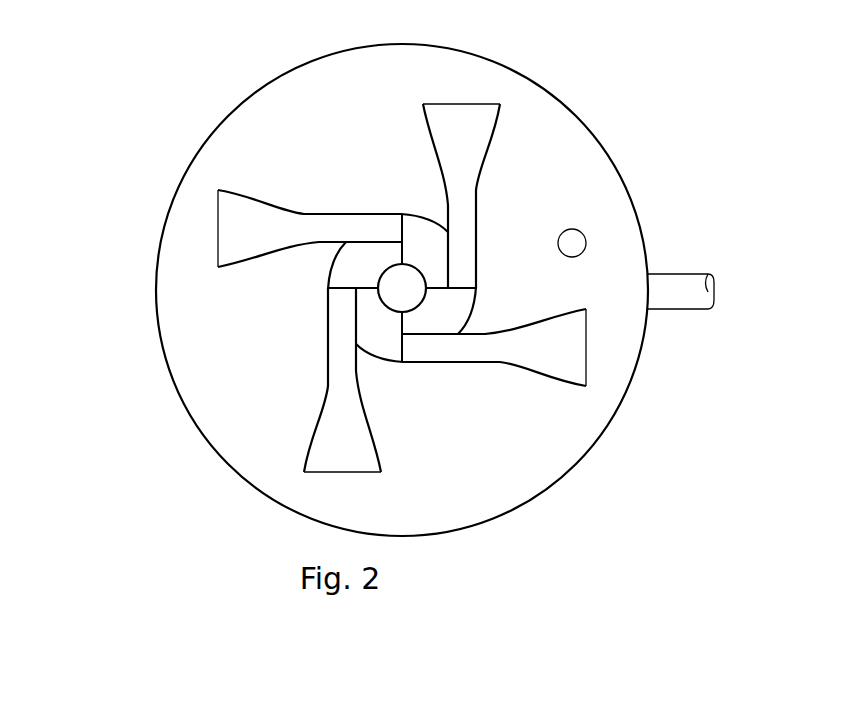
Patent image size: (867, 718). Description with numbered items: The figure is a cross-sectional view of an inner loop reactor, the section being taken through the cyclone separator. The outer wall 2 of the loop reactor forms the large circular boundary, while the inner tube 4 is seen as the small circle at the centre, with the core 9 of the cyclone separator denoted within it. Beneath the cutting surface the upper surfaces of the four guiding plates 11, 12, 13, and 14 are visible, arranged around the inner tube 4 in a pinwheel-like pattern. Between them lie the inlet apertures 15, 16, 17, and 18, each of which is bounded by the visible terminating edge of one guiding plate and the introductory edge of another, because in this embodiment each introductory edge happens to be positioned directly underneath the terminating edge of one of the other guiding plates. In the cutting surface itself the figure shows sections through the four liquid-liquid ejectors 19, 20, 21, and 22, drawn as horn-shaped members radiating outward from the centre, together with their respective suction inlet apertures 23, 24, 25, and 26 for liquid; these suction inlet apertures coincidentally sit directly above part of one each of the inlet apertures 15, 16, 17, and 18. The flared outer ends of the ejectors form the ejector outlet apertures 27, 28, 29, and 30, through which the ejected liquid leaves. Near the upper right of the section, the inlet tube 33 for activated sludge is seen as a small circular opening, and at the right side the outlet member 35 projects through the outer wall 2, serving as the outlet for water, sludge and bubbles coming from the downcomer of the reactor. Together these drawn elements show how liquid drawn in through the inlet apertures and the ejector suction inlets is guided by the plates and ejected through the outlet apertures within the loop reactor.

The outer wall 2 is at (160, 243).
The inner tube 4 is at (332, 270).
The core 9 is at (408, 336).
The guiding plate 11 is at (435, 243).
The guiding plate 12 is at (355, 258).
The guiding plate 13 is at (378, 325).
The guiding plate 14 is at (450, 313).
The inlet aperture 15 is at (437, 290).
The inlet aperture 16 is at (328, 283).
The inlet aperture 17 is at (402, 363).
The inlet aperture 18 is at (403, 320).
The liquid-liquid ejector 19 is at (487, 157).
The liquid-liquid ejector 20 is at (270, 205).
The liquid-liquid ejector 21 is at (330, 395).
The liquid-liquid ejector 22 is at (510, 368).
The suction inlet aperture 23 is at (462, 290).
The suction inlet aperture 24 is at (418, 220).
The suction inlet aperture 25 is at (398, 250).
The suction inlet aperture 26 is at (403, 360).
The ejector outlet aperture 27 is at (465, 104).
The ejector outlet aperture 28 is at (213, 222).
The ejector outlet aperture 29 is at (340, 474).
The ejector outlet aperture 30 is at (588, 350).
The inlet tube for activated sludge 33 is at (584, 238).
The outlet member 35 is at (668, 302).